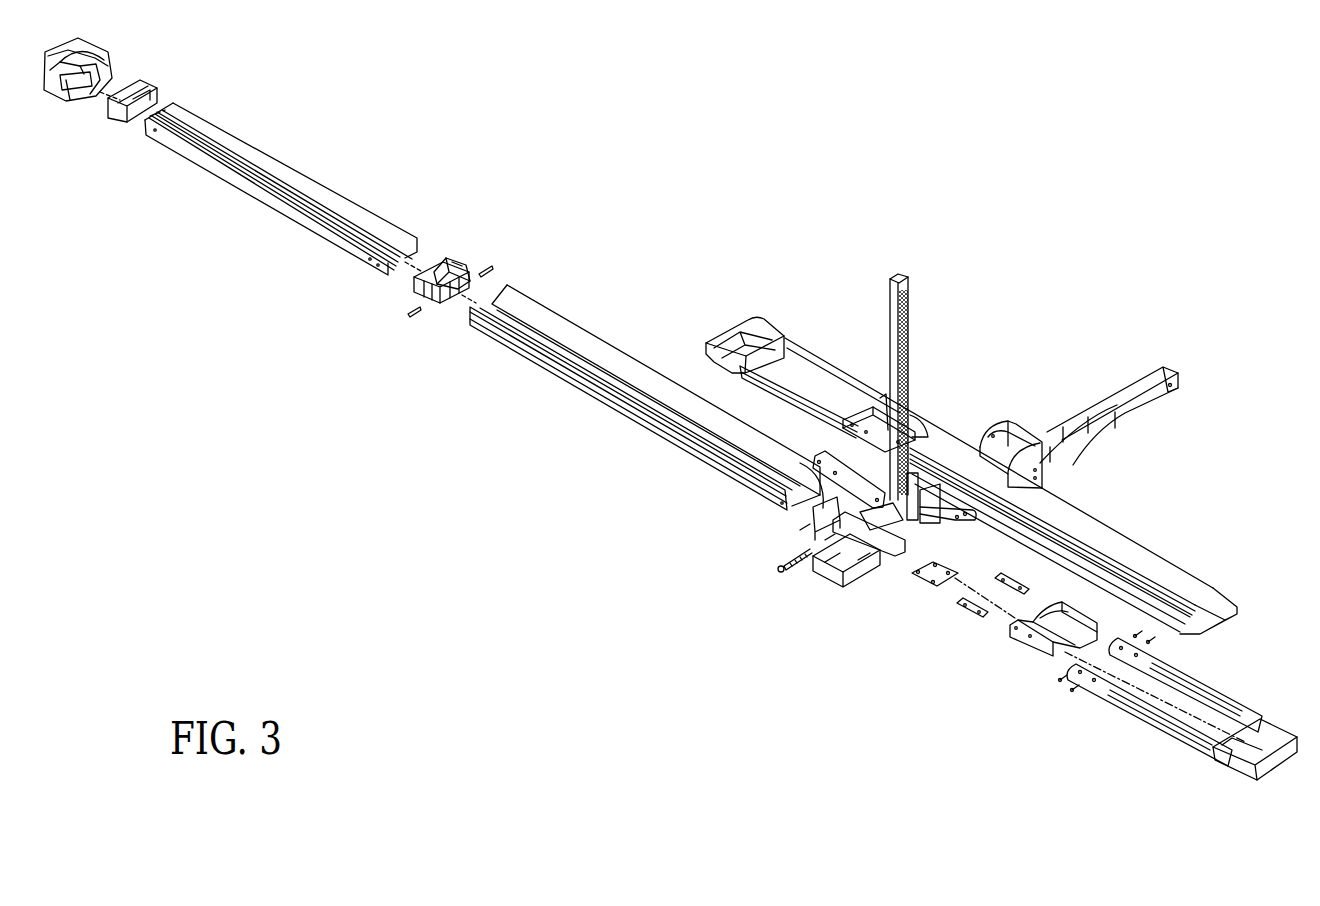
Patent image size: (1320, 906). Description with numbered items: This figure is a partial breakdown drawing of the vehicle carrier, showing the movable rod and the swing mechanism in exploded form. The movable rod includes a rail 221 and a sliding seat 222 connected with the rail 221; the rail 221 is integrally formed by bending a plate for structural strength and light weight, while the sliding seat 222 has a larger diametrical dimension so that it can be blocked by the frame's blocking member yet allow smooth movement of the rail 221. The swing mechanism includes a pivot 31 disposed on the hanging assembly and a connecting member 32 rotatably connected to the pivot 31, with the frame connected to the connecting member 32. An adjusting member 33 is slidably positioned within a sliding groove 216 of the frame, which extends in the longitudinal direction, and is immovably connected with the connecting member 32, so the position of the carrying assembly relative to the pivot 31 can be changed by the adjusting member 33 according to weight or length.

The sliding groove 216 is at (630, 417).
The rail 221 is at (297, 170).
The sliding seat 222 is at (465, 262).
The pivot 31 is at (797, 567).
The connecting member 32 is at (875, 573).
The adjusting member 33 is at (817, 497).